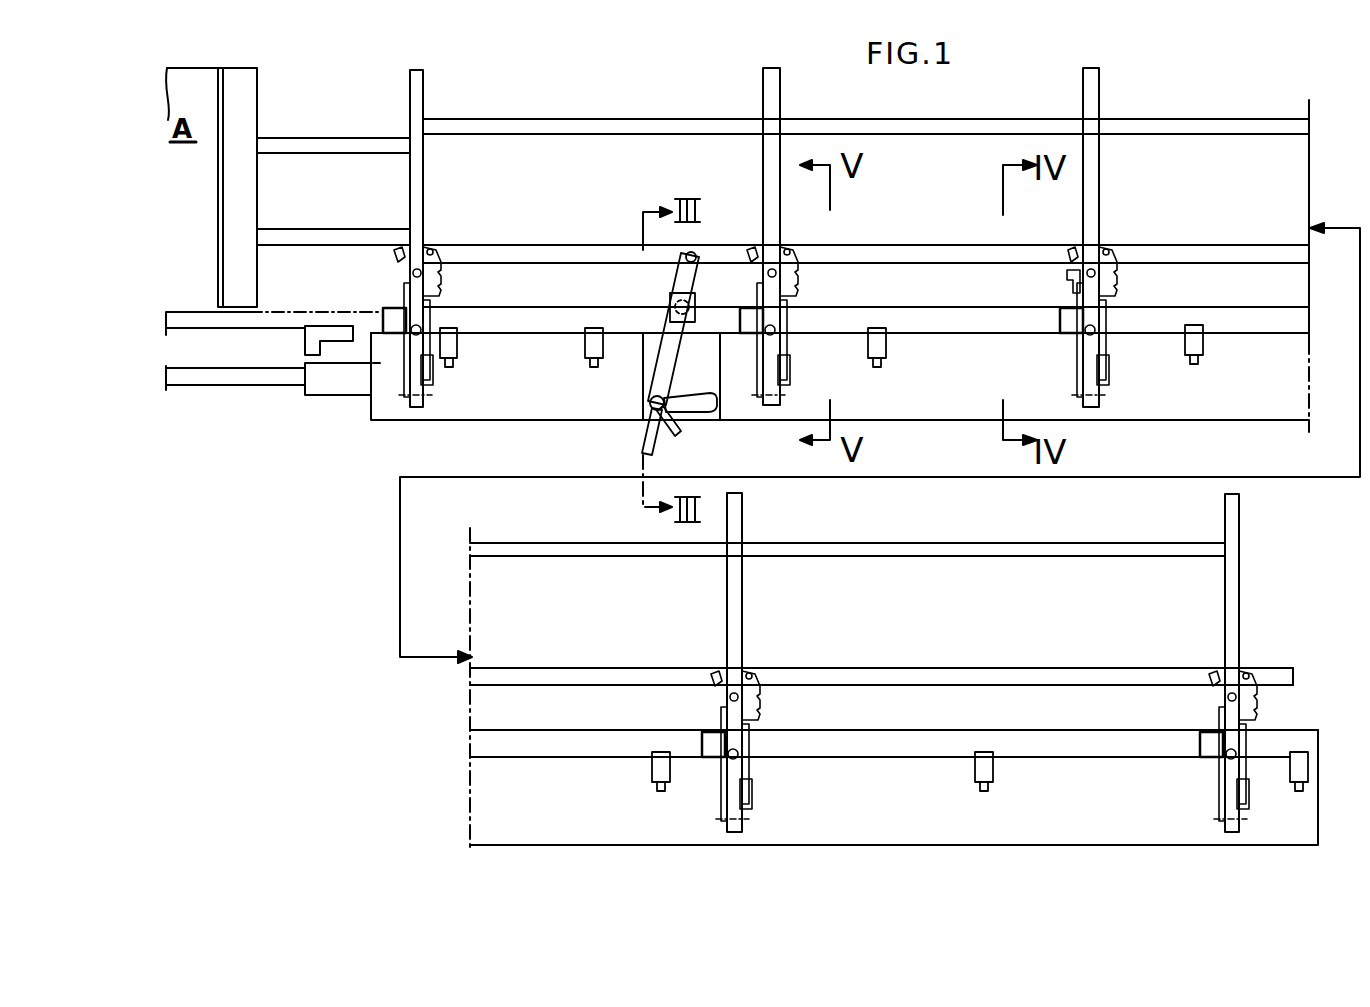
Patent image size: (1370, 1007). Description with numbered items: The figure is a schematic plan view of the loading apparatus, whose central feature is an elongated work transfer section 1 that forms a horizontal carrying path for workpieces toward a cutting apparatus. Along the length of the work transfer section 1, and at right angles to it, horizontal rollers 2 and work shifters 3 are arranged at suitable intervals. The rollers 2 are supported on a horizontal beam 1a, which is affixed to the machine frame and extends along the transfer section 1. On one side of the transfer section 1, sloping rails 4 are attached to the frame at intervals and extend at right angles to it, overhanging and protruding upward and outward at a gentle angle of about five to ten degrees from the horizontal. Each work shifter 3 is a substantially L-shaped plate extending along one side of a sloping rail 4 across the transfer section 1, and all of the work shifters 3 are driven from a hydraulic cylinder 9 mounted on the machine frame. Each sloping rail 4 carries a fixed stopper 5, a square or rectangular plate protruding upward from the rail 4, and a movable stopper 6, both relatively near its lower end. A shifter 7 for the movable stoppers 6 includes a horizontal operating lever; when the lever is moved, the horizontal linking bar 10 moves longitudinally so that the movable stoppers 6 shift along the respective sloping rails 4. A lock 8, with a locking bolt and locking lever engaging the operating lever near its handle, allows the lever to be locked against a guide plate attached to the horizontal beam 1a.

The work transfer section 1 is at (939, 352).
The horizontal beam 1a is at (1220, 320).
The horizontal rollers 2 is at (449, 355).
The work shifters 3 is at (403, 370).
The sloping rails 4 is at (423, 104).
The fixed stopper 5 is at (762, 308).
The movable stopper 6 is at (797, 312).
The shifter 7 is at (641, 448).
The lock 8 is at (680, 436).
The hydraulic cylinder 9 is at (1066, 272).
The horizontal linking bar 10 is at (912, 258).